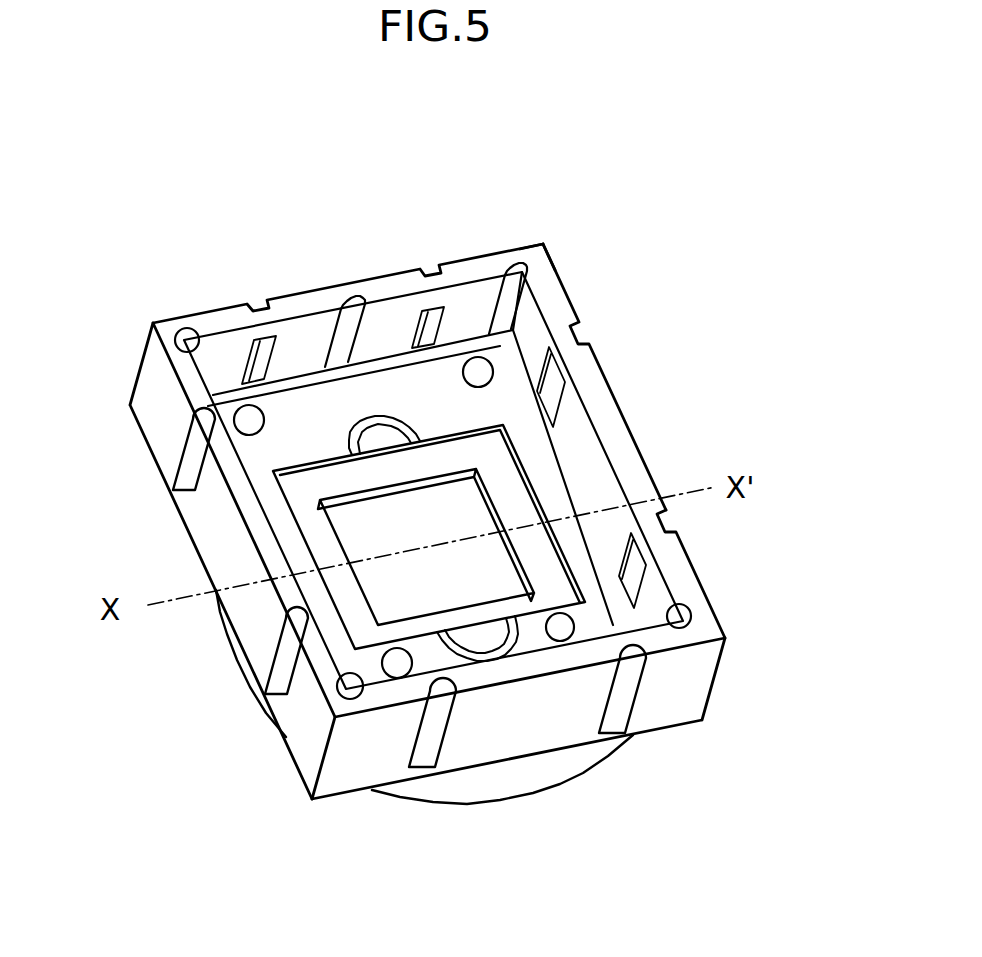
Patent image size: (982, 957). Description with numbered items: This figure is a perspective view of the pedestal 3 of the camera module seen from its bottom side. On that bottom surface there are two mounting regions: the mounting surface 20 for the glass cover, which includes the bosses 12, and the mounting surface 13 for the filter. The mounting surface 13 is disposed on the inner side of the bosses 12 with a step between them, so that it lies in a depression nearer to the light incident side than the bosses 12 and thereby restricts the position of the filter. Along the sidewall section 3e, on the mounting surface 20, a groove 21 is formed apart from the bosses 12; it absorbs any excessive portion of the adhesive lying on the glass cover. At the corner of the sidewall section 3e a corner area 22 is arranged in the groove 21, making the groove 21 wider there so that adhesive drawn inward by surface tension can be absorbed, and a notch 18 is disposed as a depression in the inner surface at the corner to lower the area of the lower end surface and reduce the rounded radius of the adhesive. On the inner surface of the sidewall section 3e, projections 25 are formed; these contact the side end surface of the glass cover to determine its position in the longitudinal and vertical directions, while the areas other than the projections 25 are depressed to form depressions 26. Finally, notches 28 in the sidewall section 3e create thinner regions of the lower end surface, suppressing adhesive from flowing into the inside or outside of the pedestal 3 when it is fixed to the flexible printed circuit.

The pedestal 3 is at (383, 273).
The sidewall section 3e is at (167, 437).
The mounting surface of the glass cover 20 is at (297, 417).
The corner area 22 is at (500, 317).
The notch 18 is at (540, 243).
The bosses 12 is at (485, 372).
The notches 28 is at (607, 427).
The depressions 26 is at (610, 500).
The groove 21 is at (667, 535).
The projections 25 is at (603, 557).
The mounting surface of the filter 13 is at (620, 650).